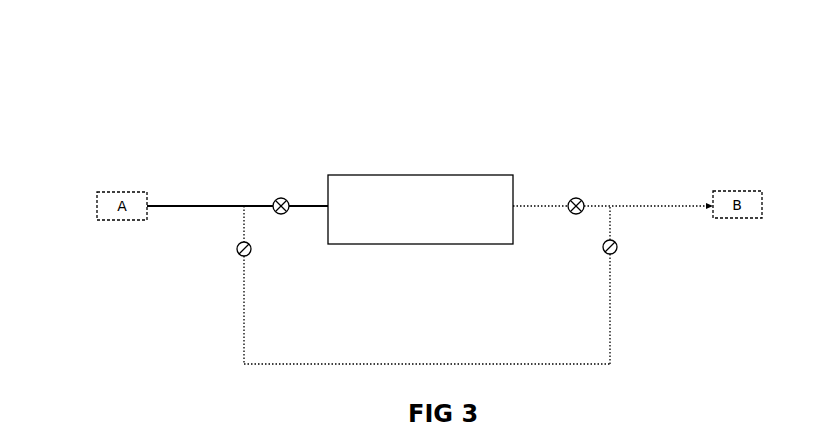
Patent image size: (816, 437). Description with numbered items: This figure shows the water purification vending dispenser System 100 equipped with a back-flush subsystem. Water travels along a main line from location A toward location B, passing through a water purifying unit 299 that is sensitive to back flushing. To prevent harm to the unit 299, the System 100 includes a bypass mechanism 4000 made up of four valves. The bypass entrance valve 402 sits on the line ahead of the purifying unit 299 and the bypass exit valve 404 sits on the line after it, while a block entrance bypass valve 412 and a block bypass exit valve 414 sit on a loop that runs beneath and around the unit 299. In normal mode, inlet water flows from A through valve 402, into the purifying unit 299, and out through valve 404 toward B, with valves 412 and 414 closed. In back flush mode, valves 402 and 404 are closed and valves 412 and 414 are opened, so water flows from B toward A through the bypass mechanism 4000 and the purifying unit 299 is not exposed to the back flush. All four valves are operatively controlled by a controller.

The water purification vending dispenser system 100 is at (601, 71).
The water purifying unit 299 is at (487, 175).
The bypass entrance valve 402 is at (283, 197).
The bypass exit valve 404 is at (578, 197).
The block entrance bypass valve 412 is at (236, 249).
The block bypass exit valve 414 is at (602, 247).
The bypass mechanism 4000 is at (619, 321).